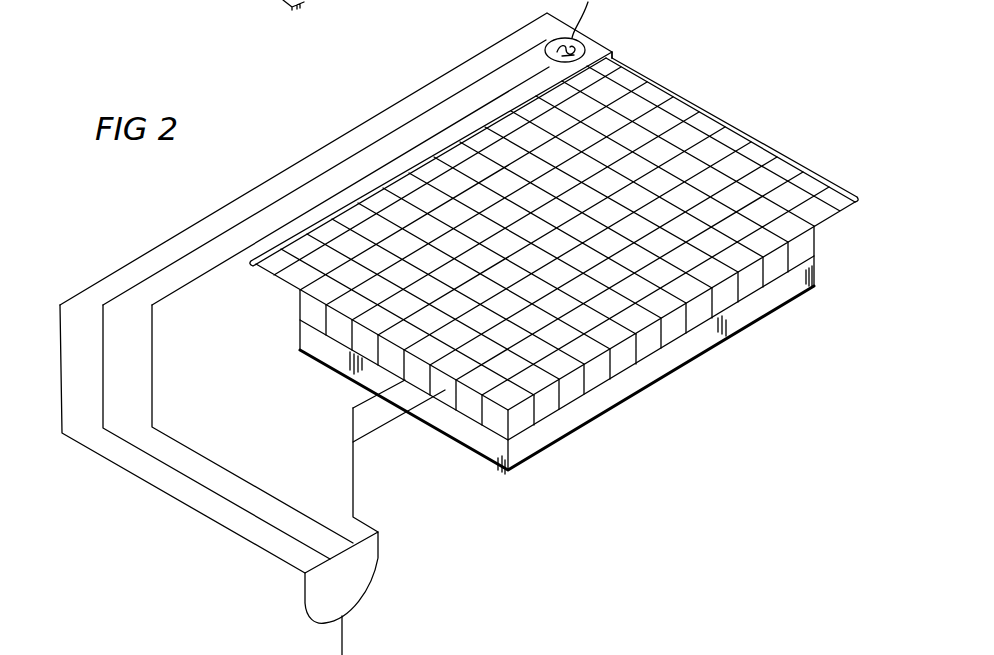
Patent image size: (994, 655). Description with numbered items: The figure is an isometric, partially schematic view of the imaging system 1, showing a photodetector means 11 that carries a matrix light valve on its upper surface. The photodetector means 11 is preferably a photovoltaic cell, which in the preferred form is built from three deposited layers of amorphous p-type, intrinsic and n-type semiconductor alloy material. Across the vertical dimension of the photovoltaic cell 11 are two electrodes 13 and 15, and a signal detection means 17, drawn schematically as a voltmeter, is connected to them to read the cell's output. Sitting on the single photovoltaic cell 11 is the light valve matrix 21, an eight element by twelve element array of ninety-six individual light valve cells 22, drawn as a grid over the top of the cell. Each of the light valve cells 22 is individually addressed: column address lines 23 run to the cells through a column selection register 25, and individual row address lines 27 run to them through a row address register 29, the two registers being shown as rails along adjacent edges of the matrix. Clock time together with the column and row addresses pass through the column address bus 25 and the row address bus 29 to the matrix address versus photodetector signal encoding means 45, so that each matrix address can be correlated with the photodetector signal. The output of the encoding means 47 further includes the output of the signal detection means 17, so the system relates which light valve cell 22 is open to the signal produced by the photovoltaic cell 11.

The imaging system 1 is at (737, 92).
The photodetector means 11 is at (819, 258).
The electrode 13 is at (362, 399).
The electrode 15 is at (385, 425).
The signal detection means 17 is at (353, 424).
The light valve matrix 21 is at (819, 226).
The light valve cells 22 is at (562, 335).
The column address lines 23 is at (497, 157).
The column selection register 25 is at (250, 270).
The row address lines 27 is at (718, 131).
The row address register 29 is at (860, 202).
The matrix address versus photodetector signal encoding means 45 is at (305, 592).
The matrix address versus photodetector signal encoding means 47 is at (345, 636).